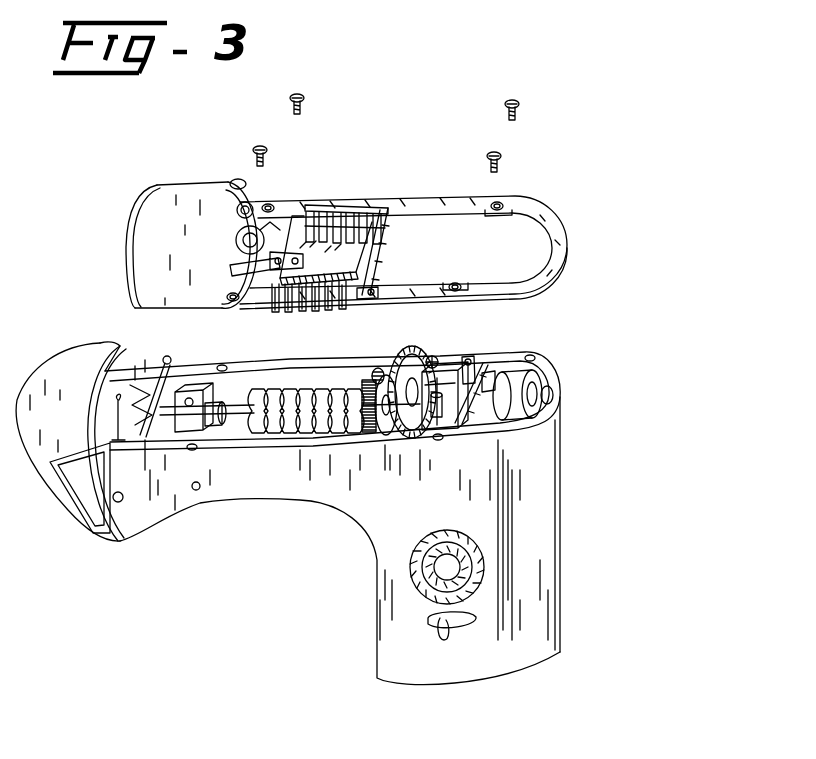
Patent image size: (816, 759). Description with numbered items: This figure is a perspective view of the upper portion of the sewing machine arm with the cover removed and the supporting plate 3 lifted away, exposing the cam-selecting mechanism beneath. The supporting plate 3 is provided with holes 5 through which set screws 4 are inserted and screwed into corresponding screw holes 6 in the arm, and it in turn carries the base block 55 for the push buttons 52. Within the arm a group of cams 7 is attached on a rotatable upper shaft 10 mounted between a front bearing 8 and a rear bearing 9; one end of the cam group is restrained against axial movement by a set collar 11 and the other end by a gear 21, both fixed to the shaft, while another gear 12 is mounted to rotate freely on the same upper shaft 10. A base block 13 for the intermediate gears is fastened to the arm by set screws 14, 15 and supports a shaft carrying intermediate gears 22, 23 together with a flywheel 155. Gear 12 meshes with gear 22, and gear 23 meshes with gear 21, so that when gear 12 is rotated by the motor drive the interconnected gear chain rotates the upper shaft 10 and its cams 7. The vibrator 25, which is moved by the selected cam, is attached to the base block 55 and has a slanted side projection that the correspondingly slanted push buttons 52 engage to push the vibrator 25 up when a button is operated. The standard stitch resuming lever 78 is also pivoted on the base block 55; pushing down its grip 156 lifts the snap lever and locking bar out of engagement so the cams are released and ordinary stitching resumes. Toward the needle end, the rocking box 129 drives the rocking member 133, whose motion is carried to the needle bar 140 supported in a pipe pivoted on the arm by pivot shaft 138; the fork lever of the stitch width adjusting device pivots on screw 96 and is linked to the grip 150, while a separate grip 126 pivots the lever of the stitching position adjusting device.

The supporting plate 3 is at (566, 241).
The set screw 4 is at (305, 97).
The holes 5 is at (274, 206).
The screw holes 6 is at (224, 367).
The cams 7 is at (345, 385).
The front bearing 8 is at (182, 420).
The rear bearing 9 is at (540, 386).
The upper shaft 10 is at (224, 426).
The set collar 11 is at (252, 455).
The gear 12 is at (408, 438).
The base block for intermediate gears 13 is at (462, 366).
The set screw 14 is at (437, 418).
The set screw 15 is at (512, 362).
The gear 21 is at (373, 433).
The intermediate gear 22 is at (432, 356).
The intermediate gear 23 is at (379, 370).
The vibrator 25 is at (364, 262).
The push buttons 52 is at (332, 310).
The base block for the push buttons 55 is at (368, 298).
The standard stitch resuming lever 78 is at (383, 240).
The screw 96 is at (195, 491).
The grip 126 is at (442, 636).
The rocking box 129 is at (262, 268).
The rocking member 133 is at (225, 408).
The pivot shaft 138 is at (110, 512).
The needle bar 140 is at (128, 392).
The grip of the stitch width adjusting device 150 is at (478, 566).
The flywheel 155 is at (470, 352).
The grip of the standard stitch resuming lever 156 is at (374, 297).